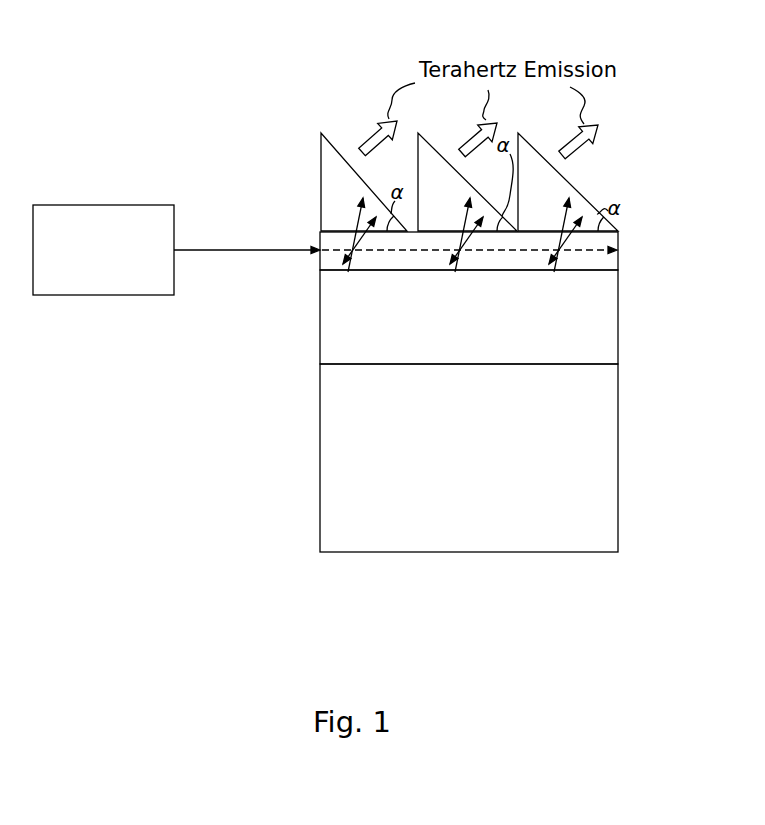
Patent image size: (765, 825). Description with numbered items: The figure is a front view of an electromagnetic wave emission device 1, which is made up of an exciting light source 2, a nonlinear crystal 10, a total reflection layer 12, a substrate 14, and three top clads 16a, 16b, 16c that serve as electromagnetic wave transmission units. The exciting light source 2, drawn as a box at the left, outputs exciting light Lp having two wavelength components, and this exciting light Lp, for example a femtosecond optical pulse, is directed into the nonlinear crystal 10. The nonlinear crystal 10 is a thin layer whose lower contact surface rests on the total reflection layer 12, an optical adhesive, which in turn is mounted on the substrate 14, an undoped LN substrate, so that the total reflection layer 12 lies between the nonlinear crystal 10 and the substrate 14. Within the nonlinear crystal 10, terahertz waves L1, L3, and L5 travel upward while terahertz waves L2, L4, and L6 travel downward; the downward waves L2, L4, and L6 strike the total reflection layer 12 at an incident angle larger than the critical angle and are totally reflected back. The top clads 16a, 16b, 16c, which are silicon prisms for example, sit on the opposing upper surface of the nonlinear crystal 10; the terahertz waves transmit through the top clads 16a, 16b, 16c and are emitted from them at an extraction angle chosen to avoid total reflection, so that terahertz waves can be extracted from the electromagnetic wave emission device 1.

The electromagnetic wave emission device 1 is at (252, 88).
The exciting light source 2 is at (104, 205).
The nonlinear crystal 10 is at (618, 251).
The total reflection layer 12 is at (618, 316).
The substrate 14 is at (618, 456).
The top clad 16a is at (320, 185).
The top clad 16b is at (494, 208).
The top clad 16c is at (578, 192).
The exciting light Lp is at (222, 249).
The terahertz wave L1 is at (356, 224).
The terahertz wave L2 is at (357, 256).
The terahertz wave L3 is at (463, 224).
The terahertz wave L4 is at (464, 256).
The terahertz wave L5 is at (562, 224).
The terahertz wave L6 is at (563, 256).